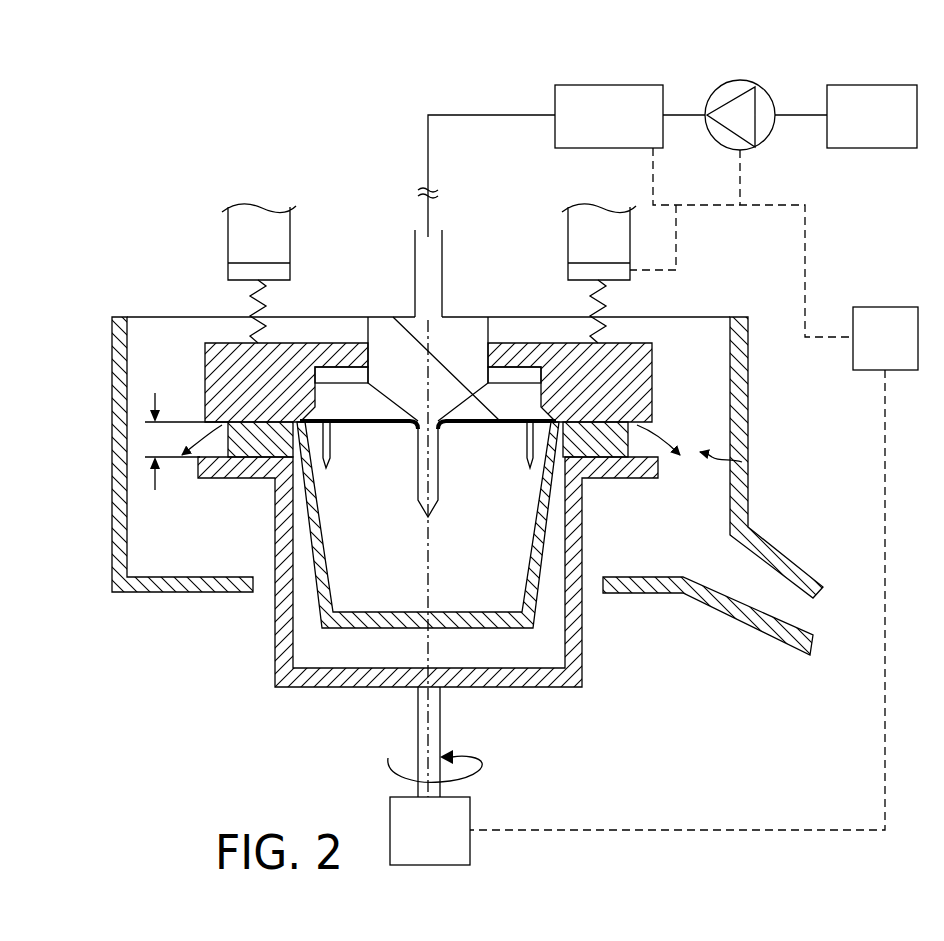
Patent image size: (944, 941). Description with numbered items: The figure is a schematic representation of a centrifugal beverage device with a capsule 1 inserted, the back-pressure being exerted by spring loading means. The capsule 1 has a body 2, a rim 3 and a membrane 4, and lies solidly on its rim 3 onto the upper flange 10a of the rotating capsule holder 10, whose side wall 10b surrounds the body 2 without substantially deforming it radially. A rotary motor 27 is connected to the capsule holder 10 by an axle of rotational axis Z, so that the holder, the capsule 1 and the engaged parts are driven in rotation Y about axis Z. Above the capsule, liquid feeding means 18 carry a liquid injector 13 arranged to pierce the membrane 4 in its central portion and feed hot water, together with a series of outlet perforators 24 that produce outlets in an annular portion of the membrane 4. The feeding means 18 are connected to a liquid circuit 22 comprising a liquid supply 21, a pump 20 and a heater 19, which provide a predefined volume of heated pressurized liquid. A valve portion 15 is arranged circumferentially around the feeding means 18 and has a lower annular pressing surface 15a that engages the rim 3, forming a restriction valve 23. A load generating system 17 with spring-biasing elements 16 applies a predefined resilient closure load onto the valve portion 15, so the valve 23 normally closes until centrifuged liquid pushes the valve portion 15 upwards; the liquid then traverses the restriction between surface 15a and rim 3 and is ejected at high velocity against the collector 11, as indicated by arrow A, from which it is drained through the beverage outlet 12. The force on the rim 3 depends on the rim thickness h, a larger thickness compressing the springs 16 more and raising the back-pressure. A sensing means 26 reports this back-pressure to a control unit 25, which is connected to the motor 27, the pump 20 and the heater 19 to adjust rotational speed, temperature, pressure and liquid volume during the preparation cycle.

The capsule 1 is at (302, 600).
The body 2 is at (540, 545).
The rim 3 is at (250, 450).
The membrane 4 is at (548, 428).
The capsule holder 10 is at (290, 660).
The upper flange 10a is at (612, 460).
The vessel side wall 10b is at (582, 545).
The collector 11 is at (112, 424).
The beverage outlet 12 is at (805, 612).
The liquid injector 13 is at (438, 490).
The valve portion 15 is at (640, 345).
The lower annular pressing surface 15a is at (620, 417).
The spring-biasing elements 16 is at (253, 300).
The load generating system 17 is at (232, 226).
The liquid feeding means 18 is at (378, 332).
The heater 19 is at (609, 116).
The pump 20 is at (738, 80).
The liquid supply 21 is at (872, 116).
The liquid circuit 22 is at (478, 112).
The restriction valve 23 is at (742, 462).
The outlet perforators 24 is at (330, 445).
The control unit 25 is at (885, 338).
The sensing means 26 is at (288, 268).
The rotary motor 27 is at (430, 831).
The thickness of the rim h is at (186, 441).
The arrow indicating liquid ejection A is at (700, 430).
The rotational axis Z is at (440, 710).
The rotation Y is at (441, 766).